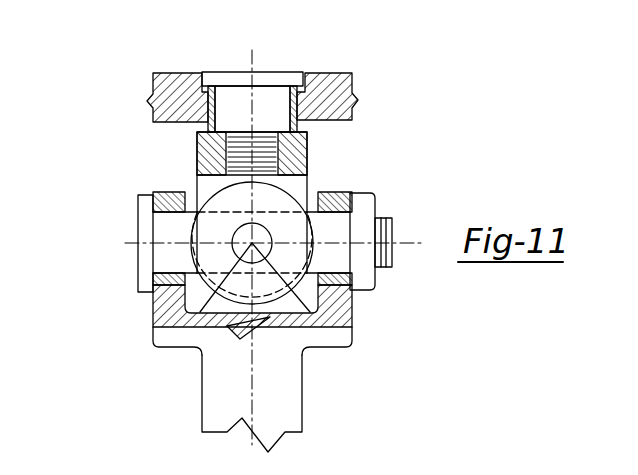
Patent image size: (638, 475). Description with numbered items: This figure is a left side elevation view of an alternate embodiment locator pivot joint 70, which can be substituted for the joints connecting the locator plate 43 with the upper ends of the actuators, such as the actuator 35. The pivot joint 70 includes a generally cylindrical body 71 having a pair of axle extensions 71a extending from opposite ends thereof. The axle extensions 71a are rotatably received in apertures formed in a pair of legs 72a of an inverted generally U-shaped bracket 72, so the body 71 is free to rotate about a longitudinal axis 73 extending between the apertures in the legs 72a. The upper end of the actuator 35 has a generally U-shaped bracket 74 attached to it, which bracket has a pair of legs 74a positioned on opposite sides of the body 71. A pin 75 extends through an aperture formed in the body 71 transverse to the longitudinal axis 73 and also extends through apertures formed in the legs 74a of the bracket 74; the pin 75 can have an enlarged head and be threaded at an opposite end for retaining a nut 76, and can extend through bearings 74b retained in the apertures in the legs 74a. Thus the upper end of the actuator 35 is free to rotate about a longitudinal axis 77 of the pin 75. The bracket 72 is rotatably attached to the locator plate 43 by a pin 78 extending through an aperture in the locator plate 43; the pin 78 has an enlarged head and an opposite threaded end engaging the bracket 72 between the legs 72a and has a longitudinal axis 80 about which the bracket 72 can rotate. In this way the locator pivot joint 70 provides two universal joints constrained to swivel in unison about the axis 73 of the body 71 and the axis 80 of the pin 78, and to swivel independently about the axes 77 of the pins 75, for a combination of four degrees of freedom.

The actuator 35 is at (293, 392).
The locator plate 43 is at (181, 78).
The locator pivot joint 70 is at (158, 368).
The body 71 is at (288, 202).
The axle extensions 71a is at (197, 312).
The bracket 72 is at (197, 150).
The legs 72a is at (202, 188).
The longitudinal axis 73 is at (313, 312).
The bracket 74 is at (322, 338).
The legs 74a is at (162, 195).
The bearings 74b is at (153, 310).
The pins 75 is at (138, 273).
The nut 76 is at (375, 200).
The longitudinal axis 77 is at (398, 240).
The pin 78 is at (220, 78).
The longitudinal axis 80 is at (255, 62).